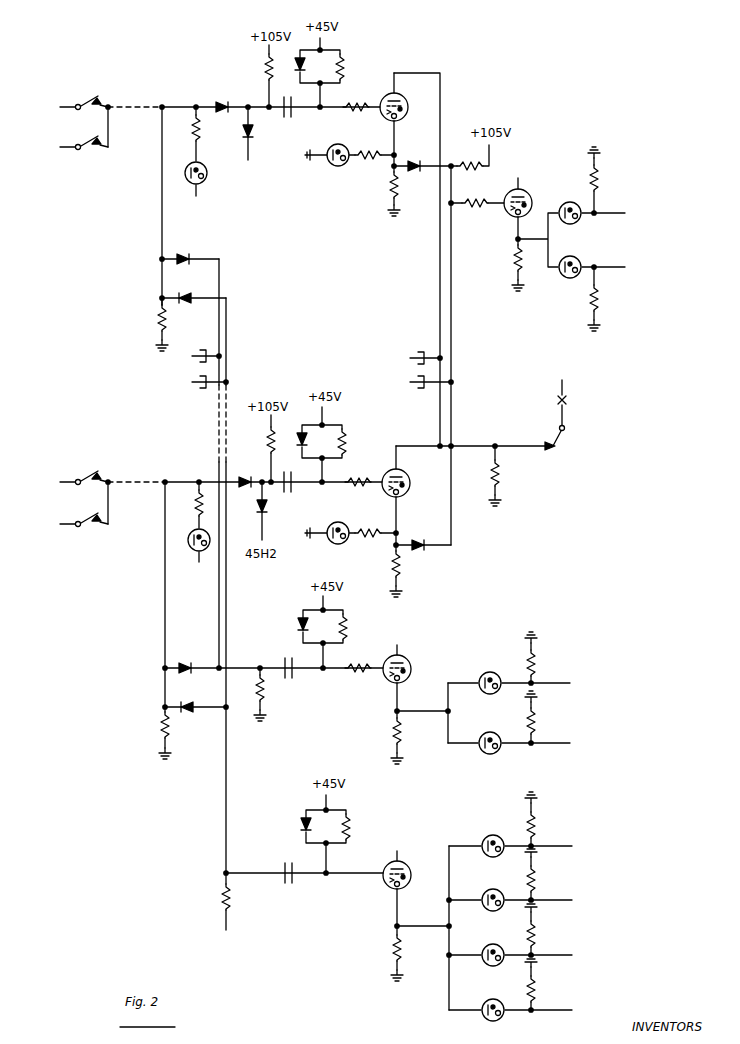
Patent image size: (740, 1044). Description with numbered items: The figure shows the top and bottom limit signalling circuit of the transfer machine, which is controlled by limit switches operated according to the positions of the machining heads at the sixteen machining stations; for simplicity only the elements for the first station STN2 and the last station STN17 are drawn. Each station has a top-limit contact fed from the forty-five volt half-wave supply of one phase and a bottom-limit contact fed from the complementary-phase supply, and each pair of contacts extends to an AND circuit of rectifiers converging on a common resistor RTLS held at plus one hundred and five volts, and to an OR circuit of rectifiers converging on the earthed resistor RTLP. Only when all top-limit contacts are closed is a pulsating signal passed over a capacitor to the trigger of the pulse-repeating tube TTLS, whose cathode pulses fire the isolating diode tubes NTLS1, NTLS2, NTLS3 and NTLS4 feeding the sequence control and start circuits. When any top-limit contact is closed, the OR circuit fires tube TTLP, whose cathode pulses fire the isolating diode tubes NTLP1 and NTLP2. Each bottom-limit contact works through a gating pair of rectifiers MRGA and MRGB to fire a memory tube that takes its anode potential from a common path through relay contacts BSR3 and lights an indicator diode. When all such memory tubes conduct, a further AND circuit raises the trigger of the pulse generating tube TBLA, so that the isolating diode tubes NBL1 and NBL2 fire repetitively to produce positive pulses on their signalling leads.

The machining station STN2 is at (88, 142).
The gating rectifier MRGA is at (223, 96).
The gating rectifier MRGB is at (261, 144).
The pulse generating tube TBLA is at (506, 190).
The isolating diode tube NBL1 is at (600, 194).
The isolating diode tube NBL2 is at (600, 293).
The machining station STN17 is at (89, 517).
The relay contacts BSR3 is at (571, 409).
The resistor RTLP is at (275, 693).
The pulse-repeating tube TTLP is at (404, 664).
The isolating diode tube NTLP1 is at (525, 663).
The isolating diode tube NTLP2 is at (525, 722).
The resistor RTLS is at (233, 913).
The pulse-repeating tube TTLS is at (405, 869).
The diode tube NTLS1 is at (526, 824).
The diode tube NTLS2 is at (526, 878).
The diode tube NTLS3 is at (526, 933).
The diode tube NTLS4 is at (526, 988).